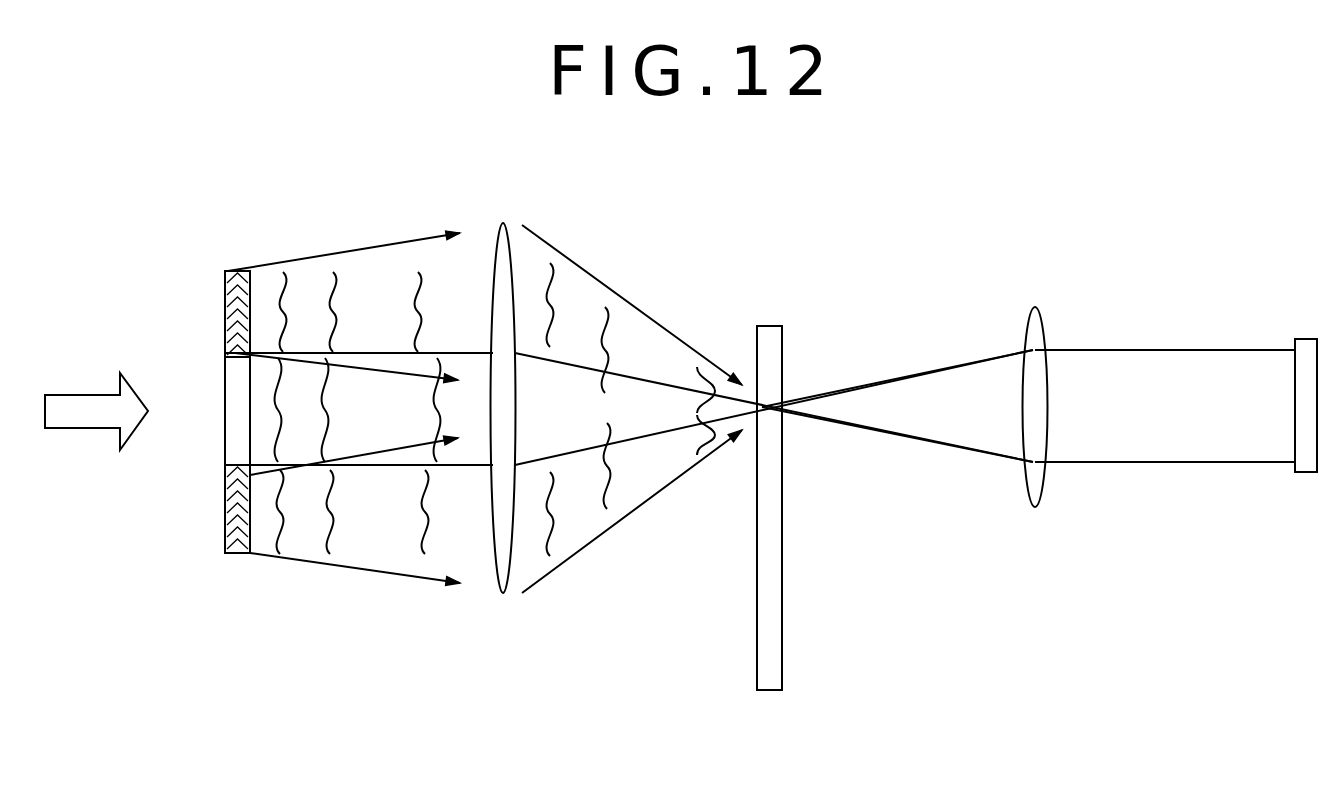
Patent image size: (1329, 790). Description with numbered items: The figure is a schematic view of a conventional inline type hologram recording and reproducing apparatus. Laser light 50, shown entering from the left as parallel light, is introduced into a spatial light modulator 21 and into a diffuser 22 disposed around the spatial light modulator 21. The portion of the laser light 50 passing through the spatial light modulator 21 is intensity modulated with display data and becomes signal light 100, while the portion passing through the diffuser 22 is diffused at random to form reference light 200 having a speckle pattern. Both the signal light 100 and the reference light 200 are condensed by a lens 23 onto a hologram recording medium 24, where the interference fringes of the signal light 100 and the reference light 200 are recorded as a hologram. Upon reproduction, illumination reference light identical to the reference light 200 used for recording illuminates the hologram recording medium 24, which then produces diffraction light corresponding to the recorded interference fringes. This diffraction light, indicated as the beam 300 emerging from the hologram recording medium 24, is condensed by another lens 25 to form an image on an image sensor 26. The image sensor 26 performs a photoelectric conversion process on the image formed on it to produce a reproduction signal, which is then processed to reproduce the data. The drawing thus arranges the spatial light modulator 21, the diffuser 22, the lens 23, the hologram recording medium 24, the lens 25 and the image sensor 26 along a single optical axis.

The laser light 50 is at (70, 393).
The spatial light modulator 21 is at (225, 438).
The diffuser 22 is at (225, 305).
The reference light 200 is at (360, 250).
The signal light 100 is at (372, 370).
The lens 23 is at (503, 222).
The hologram recording medium 24 is at (770, 325).
The converging light beam 300 is at (922, 374).
The lens 25 is at (1035, 306).
The image sensor 26 is at (1307, 338).